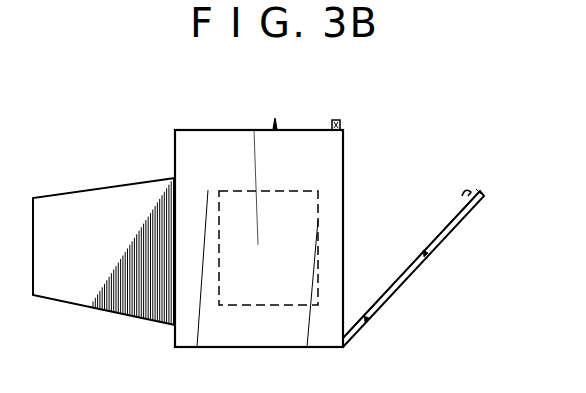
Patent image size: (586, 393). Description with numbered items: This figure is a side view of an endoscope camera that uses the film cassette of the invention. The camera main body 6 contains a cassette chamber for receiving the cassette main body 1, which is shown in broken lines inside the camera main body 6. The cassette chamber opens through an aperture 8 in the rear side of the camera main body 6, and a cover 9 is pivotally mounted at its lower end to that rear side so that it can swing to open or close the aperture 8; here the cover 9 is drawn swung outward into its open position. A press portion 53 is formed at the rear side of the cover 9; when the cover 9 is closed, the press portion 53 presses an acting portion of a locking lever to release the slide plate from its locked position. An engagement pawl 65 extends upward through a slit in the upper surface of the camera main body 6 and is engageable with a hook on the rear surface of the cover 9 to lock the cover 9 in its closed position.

The cassette main body 1 is at (320, 227).
The camera main body 6 is at (275, 118).
The aperture 8 is at (345, 156).
The cover 9 is at (455, 236).
The press portion 53 is at (466, 190).
The engagement pawl 65 is at (336, 120).